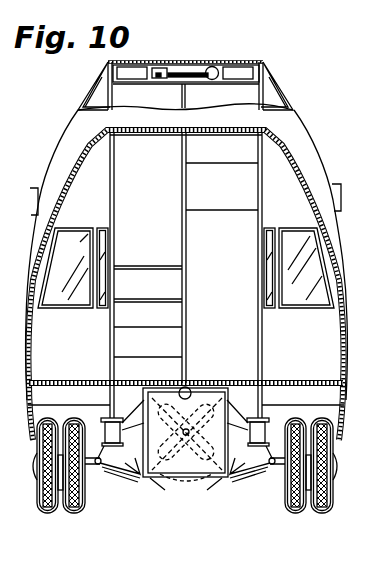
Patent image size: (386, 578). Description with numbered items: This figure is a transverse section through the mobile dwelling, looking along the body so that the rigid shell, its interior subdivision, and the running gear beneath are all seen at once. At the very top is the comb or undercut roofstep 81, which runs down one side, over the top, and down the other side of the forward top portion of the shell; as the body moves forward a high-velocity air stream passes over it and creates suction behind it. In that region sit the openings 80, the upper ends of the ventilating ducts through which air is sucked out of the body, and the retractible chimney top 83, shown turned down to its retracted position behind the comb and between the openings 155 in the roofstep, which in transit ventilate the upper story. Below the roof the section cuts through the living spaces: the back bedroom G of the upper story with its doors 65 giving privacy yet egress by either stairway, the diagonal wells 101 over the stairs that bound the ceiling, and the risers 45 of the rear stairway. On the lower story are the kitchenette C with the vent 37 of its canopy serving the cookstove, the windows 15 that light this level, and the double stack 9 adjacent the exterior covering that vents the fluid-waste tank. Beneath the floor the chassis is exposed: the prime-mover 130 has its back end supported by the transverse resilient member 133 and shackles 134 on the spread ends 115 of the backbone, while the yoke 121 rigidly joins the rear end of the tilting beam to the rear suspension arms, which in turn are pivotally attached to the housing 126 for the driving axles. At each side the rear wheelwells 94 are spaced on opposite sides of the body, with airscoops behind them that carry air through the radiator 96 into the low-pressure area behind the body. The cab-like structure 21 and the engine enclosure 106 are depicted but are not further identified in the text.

The double stack 9 is at (30, 202).
The windows 15 is at (186, 268).
The cab 21 is at (260, 92).
The vent 37 is at (338, 183).
The risers 45 is at (148, 319).
The doors 65 is at (148, 213).
The openings 80 is at (268, 100).
The roofstep 81 is at (104, 66).
The retractible chimney top 83 is at (161, 80).
The rear wheelwells 94 is at (338, 410).
The radiator 96 is at (245, 382).
The diagonal wells 101 is at (222, 186).
The engine 106 is at (156, 489).
The spread ends 115 is at (112, 398).
The yoke 121 is at (114, 138).
The housing 126 is at (106, 472).
The prime-mover 130 is at (168, 381).
The transverse resilient member 133 is at (253, 472).
The shackles 134 is at (103, 419).
The openings 155 is at (228, 68).
The back bedroom G is at (147, 193).
The kitchenette C is at (214, 287).